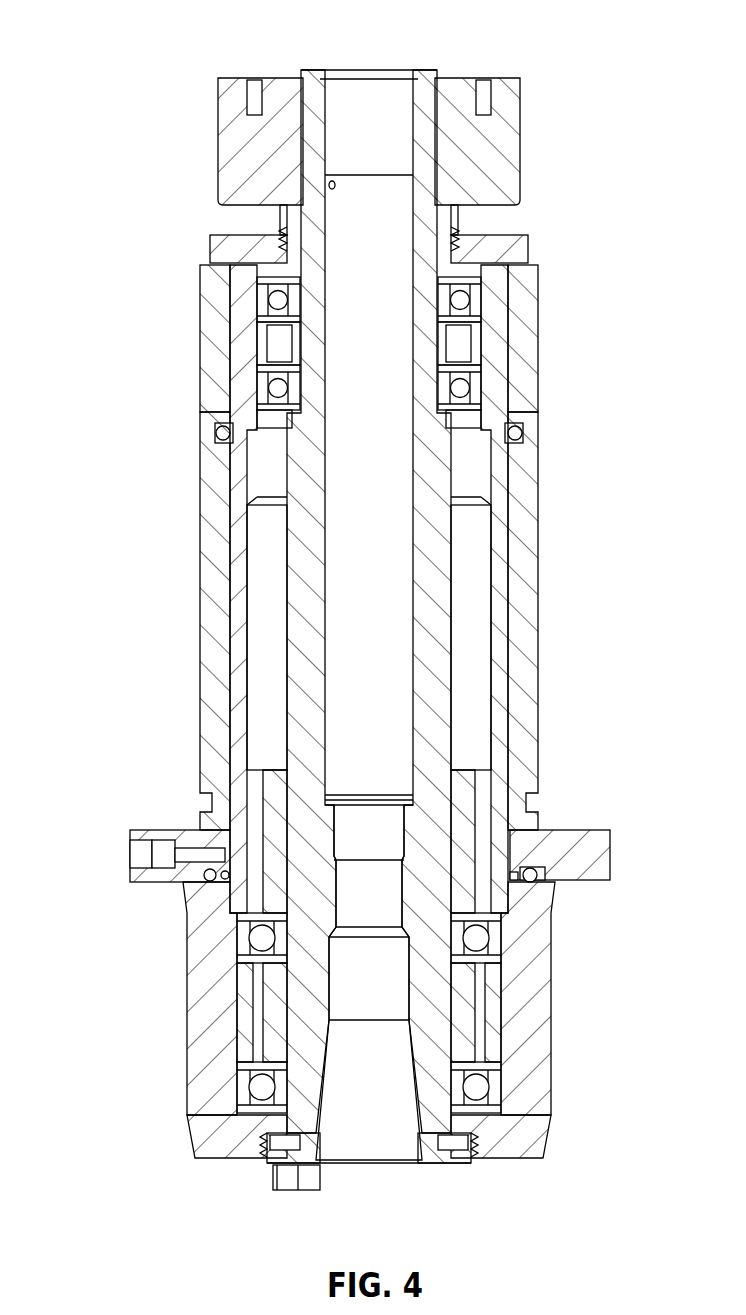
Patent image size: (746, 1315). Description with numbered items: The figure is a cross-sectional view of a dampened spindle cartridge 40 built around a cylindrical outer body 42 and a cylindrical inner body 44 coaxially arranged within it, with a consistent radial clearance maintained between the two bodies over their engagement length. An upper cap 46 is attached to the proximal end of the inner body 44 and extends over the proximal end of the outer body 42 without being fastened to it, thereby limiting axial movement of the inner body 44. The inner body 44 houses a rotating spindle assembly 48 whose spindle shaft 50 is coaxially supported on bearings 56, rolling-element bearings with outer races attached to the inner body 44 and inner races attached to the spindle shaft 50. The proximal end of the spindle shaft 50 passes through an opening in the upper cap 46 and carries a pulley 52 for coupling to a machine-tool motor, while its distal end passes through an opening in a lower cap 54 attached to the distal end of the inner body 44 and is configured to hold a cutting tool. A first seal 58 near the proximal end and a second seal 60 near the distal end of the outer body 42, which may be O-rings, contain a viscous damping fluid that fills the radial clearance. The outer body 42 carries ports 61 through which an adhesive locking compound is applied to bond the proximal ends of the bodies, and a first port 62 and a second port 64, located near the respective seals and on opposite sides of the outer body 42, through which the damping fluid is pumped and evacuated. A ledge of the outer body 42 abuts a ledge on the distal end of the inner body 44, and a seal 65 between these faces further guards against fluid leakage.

The dampened spindle cartridge 40 is at (354, 629).
The outer body 42 is at (208, 595).
The inner body 44 is at (200, 1020).
The upper cap 46 is at (500, 250).
The spindle assembly 48 is at (299, 1199).
The spindle shaft 50 is at (306, 78).
The pulley 52 is at (258, 148).
The lower cap 54 is at (520, 1143).
The bearings 56 is at (462, 386).
The first seal 58 is at (217, 436).
The second seal 60 is at (512, 873).
The ports 61 is at (203, 405).
The first port 62 is at (530, 452).
The second port 64 is at (150, 848).
The seal 65 is at (535, 880).